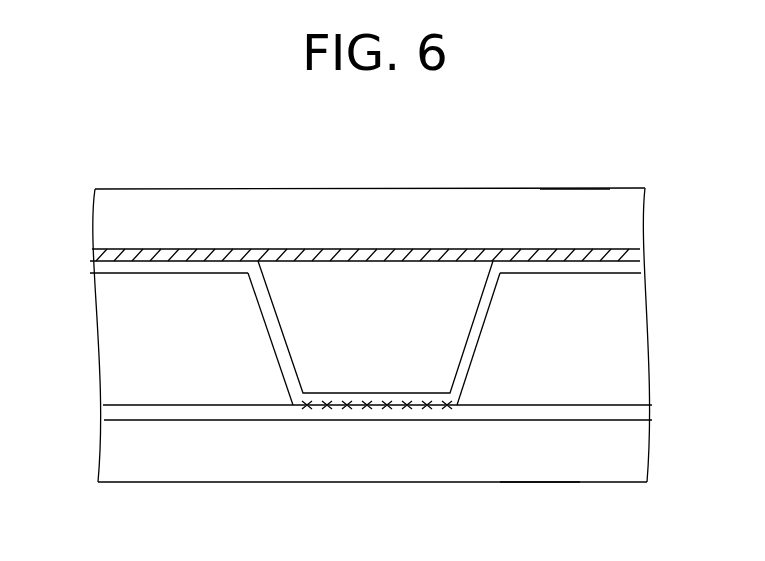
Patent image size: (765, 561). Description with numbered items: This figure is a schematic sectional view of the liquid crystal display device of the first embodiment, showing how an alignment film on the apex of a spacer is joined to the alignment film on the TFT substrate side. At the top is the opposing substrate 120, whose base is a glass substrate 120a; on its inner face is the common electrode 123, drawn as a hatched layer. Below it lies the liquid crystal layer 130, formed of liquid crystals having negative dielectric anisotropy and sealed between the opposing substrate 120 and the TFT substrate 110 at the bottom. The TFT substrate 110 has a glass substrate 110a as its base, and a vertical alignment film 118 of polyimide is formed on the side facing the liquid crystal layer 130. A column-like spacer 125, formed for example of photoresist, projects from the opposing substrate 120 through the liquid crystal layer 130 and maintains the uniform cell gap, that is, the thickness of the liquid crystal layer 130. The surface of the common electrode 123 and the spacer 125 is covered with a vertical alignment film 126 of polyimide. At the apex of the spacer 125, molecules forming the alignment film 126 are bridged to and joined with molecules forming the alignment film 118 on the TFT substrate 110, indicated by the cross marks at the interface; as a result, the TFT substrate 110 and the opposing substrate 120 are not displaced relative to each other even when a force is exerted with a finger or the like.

The TFT substrate 110 is at (333, 473).
The glass substrate 110a is at (535, 460).
The vertical alignment film 118 is at (583, 407).
The opposing substrate 120 is at (369, 193).
The glass substrate 120a is at (574, 195).
The common electrode 123 is at (640, 250).
The spacer 125 is at (369, 278).
The vertical alignment film 126 is at (478, 311).
The liquid crystal layer 130 is at (107, 330).